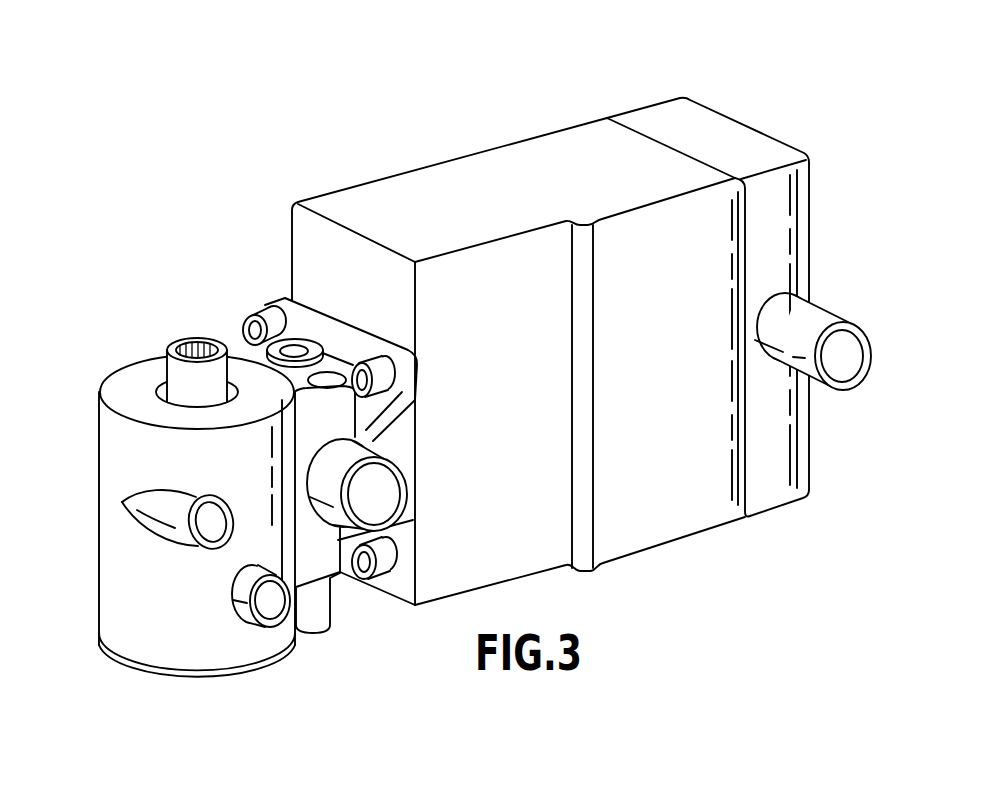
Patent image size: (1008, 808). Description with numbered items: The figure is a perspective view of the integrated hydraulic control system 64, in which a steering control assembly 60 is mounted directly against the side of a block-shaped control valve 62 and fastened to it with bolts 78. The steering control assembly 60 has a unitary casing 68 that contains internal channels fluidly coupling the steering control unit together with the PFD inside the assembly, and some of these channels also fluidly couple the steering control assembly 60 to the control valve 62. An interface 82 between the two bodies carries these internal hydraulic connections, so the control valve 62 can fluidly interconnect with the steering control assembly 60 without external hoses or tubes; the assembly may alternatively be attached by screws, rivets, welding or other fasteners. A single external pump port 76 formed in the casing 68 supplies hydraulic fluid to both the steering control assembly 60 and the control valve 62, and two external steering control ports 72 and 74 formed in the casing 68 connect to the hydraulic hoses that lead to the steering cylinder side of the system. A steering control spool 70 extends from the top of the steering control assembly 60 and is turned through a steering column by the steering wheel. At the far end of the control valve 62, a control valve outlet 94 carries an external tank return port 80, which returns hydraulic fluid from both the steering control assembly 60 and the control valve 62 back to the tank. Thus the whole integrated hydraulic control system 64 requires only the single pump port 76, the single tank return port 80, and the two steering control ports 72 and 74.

The steering control assembly 60 is at (161, 492).
The control valve 62 is at (448, 150).
The integrated hydraulic control system 64 is at (563, 314).
The unitary casing 68 is at (98, 465).
The steering control spool 70 is at (183, 340).
The external steering control port 72 is at (205, 553).
The external steering control port 74 is at (258, 628).
The external pump port 76 is at (408, 478).
The bolts 78 is at (250, 314).
The external tank return port 80 is at (847, 320).
The interface 82 is at (345, 302).
The control valve outlet 94 is at (810, 196).